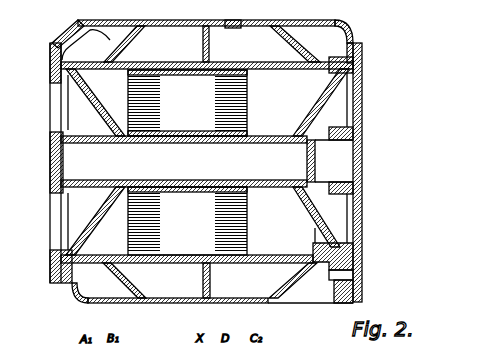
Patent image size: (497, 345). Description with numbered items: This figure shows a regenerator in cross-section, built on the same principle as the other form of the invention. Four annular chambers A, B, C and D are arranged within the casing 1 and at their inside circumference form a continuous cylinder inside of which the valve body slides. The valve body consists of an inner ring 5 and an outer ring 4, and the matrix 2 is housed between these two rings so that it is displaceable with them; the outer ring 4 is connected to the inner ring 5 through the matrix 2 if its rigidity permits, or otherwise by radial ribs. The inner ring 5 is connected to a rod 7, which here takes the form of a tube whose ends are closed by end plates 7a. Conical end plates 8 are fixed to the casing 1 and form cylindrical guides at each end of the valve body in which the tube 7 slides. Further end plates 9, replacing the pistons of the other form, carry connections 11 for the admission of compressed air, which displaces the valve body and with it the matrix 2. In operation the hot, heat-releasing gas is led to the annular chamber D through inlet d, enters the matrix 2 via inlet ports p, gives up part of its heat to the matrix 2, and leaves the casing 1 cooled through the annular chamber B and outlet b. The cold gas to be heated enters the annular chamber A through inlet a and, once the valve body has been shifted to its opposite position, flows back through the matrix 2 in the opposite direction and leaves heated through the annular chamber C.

The casing 1 is at (66, 34).
The matrix 2 is at (196, 113).
The outer ring 4 is at (101, 68).
The inner ring 5 is at (128, 94).
The rod 7 is at (100, 135).
The end plates 7a is at (320, 164).
The end plates 8 is at (55, 163).
The end plates 9 is at (50, 152).
The connections 11 is at (51, 233).
The annular chamber A is at (92, 42).
The annular chamber B is at (165, 50).
The annular chamber C is at (233, 46).
The annular chamber D is at (316, 42).
The inlet a is at (110, 48).
The inlet ports p is at (320, 262).
The outlet b is at (170, 298).
The inlet d is at (311, 299).